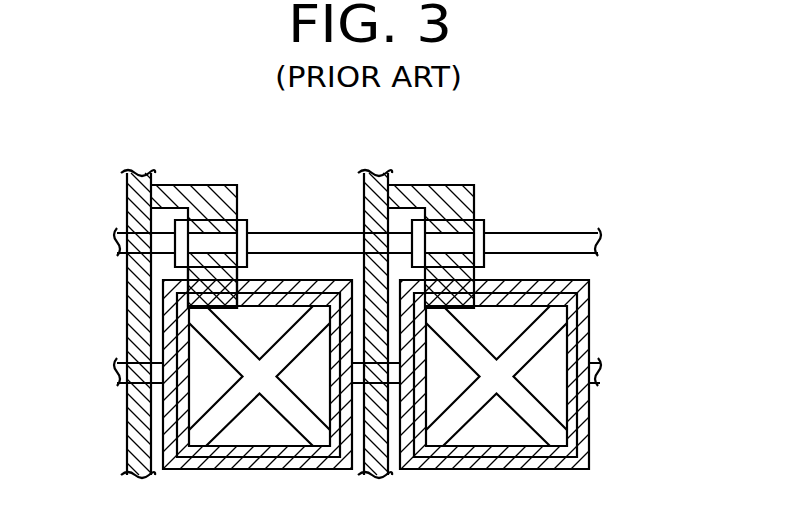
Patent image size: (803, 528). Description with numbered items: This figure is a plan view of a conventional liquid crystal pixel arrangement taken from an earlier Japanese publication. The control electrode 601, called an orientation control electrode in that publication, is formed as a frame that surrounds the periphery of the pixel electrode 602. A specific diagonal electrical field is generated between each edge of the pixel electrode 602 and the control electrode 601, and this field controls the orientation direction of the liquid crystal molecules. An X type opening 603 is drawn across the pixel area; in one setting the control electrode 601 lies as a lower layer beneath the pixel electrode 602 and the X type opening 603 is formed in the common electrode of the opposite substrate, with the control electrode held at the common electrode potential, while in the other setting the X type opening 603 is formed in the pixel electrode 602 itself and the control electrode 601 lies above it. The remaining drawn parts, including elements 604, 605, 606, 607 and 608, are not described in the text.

The control electrode 601 is at (302, 288).
The pixel electrode 602 is at (263, 322).
The X type opening 603 is at (308, 326).
The source/drain contact pad 604 is at (245, 247).
The data bus line 605 is at (550, 247).
The gate electrode / thin film transistor 606 is at (208, 226).
The gate bus line 607 is at (140, 187).
The contact portion 608 is at (193, 277).